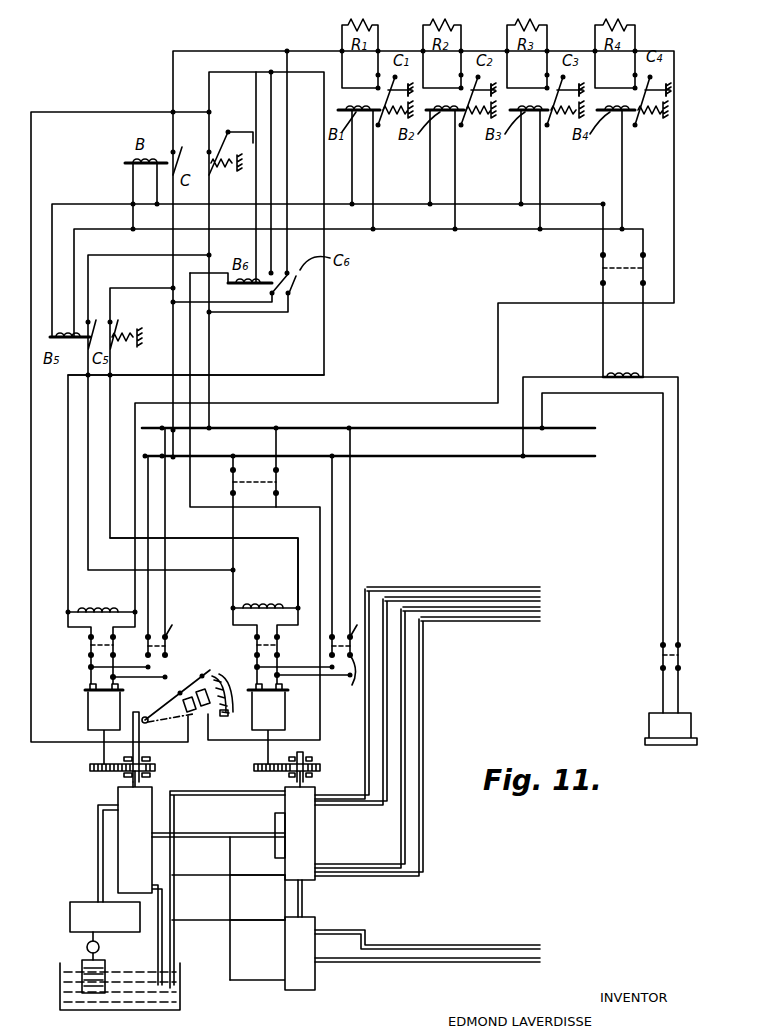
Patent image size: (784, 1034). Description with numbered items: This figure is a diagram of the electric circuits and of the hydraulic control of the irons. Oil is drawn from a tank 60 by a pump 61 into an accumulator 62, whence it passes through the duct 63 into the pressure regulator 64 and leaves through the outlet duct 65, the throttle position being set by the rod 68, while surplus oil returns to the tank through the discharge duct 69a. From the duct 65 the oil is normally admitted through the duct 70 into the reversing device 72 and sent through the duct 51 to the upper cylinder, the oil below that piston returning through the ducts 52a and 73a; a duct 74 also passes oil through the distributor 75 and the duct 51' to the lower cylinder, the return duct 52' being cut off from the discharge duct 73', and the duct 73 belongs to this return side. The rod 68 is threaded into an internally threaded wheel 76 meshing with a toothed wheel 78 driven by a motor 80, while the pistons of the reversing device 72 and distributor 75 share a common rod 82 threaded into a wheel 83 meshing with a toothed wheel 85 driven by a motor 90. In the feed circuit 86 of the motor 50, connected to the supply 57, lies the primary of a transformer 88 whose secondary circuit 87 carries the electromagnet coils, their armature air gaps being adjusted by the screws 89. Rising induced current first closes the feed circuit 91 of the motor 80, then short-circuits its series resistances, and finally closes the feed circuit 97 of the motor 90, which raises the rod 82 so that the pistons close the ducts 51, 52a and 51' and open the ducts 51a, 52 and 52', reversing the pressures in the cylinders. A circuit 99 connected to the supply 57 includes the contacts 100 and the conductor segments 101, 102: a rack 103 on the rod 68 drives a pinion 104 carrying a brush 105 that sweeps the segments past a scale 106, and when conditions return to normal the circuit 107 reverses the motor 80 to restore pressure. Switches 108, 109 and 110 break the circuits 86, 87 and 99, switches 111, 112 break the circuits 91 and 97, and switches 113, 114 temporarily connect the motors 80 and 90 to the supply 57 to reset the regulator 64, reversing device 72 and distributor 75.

The motor 50 is at (656, 727).
The duct 51 is at (427, 692).
The duct 52 is at (427, 684).
The duct 51a is at (472, 612).
The duct 52a is at (530, 622).
The duct 51' is at (427, 975).
The return duct 52' is at (427, 931).
The supply 57 is at (593, 428).
The tank 60 is at (175, 1000).
The pump 61 is at (86, 946).
The accumulator 62 is at (76, 912).
The duct 63 is at (98, 862).
The pressure regulator 64 is at (118, 836).
The outlet duct 65 is at (206, 828).
The rod 68 is at (150, 770).
The discharge duct 69a is at (140, 962).
The duct 70 is at (275, 822).
The reversing device 72 is at (305, 842).
The duct 73 is at (227, 877).
The duct 73a is at (200, 872).
The discharge duct 73' is at (228, 905).
The duct 74 is at (232, 895).
The distributor 75 is at (290, 946).
The internally threaded wheel 76 is at (171, 764).
The toothed wheel 78 is at (92, 772).
The motor 80 is at (88, 713).
The common rod 82 is at (304, 896).
The internally threaded wheel 83 is at (320, 770).
The toothed wheel 85 is at (255, 767).
The feed circuit 86 is at (663, 584).
The secondary circuit 87 is at (472, 229).
The transformer 88 is at (623, 381).
The screws 89 is at (412, 90).
The motor 90 is at (286, 713).
The feed circuit 91 is at (296, 51).
The feed circuit 97 is at (238, 544).
The circuit 99 is at (104, 112).
The contacts 100 is at (227, 132).
The conductor segment 101 is at (170, 726).
The conductor segment 102 is at (220, 714).
The rack 103 is at (142, 735).
The pinion 104 is at (146, 716).
The brush 105 is at (184, 686).
The scale 106 is at (226, 692).
The circuit 107 is at (262, 190).
The switch 108 is at (660, 656).
The switch 109 is at (603, 269).
The switch 110 is at (280, 483).
The switch 111 is at (88, 645).
The switch 112 is at (250, 645).
The switch 113 is at (188, 618).
The switch 114 is at (342, 570).